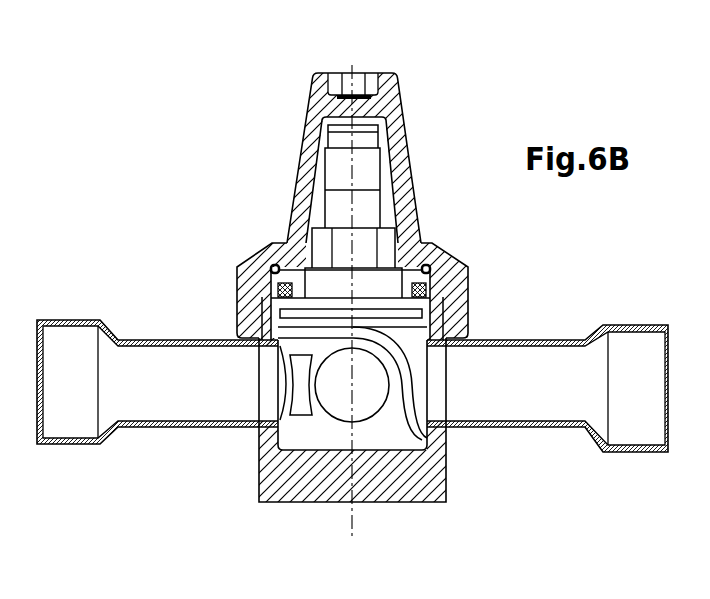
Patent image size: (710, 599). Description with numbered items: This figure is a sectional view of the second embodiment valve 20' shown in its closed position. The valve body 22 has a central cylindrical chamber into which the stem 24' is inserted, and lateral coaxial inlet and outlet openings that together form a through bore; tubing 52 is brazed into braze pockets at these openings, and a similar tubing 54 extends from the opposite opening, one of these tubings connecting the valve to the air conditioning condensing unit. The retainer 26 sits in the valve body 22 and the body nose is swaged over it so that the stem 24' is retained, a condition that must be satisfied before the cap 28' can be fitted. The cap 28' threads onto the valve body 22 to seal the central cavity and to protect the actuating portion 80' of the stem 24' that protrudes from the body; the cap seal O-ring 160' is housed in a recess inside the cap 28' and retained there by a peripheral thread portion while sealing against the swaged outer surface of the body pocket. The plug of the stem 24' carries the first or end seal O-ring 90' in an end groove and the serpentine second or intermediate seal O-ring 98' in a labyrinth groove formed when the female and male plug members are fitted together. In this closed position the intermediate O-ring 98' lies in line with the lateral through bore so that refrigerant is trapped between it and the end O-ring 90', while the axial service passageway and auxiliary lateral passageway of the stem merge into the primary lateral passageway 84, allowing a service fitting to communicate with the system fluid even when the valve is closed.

The second embodiment valve 20' is at (411, 281).
The cap 28' is at (380, 158).
The actuating portion 80' is at (391, 211).
The cap seal O-ring 160' is at (389, 223).
The retainer 26 is at (468, 268).
The first or end seal O-ring 90' is at (401, 307).
The second or intermediate seal O-ring 98' is at (297, 311).
The valve body 22 is at (417, 487).
The first or primary lateral passageway 84 is at (352, 388).
The stem 24' is at (343, 462).
The tubing 52 is at (166, 427).
The outlet pipe 54 is at (498, 428).